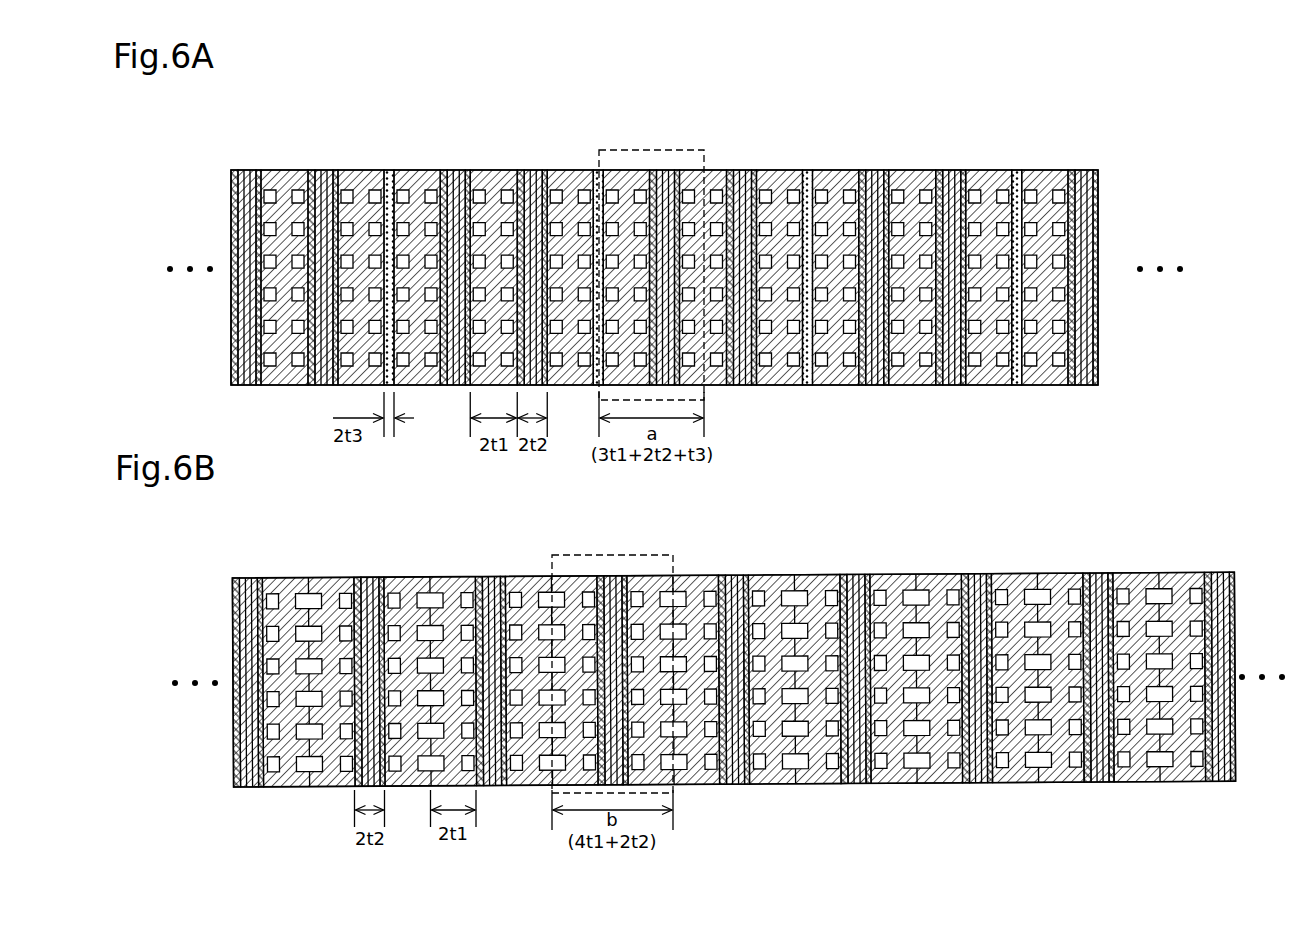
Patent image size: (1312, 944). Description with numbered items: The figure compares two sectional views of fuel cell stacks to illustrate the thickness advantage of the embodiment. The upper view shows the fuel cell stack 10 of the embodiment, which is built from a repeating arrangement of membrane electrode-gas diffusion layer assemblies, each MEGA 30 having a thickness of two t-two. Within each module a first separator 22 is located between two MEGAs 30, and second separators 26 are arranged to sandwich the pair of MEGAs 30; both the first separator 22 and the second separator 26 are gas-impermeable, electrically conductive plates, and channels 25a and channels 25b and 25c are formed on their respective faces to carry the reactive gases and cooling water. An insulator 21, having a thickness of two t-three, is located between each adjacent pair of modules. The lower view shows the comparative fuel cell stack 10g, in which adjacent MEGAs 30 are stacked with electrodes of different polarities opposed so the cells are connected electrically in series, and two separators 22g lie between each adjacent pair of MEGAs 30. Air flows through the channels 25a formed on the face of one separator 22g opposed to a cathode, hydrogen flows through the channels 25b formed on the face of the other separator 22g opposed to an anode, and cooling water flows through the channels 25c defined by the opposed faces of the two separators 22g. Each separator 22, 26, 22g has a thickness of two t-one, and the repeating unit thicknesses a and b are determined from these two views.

In FIG. 6A, the fuel cell stack 10 is at (199, 122).
In FIG. 6B, the fuel cell stack 10g is at (202, 528).
In FIG. 6A, the insulator 21 is at (388, 168).
In FIG. 6A, the first separator 22 is at (285, 168).
In FIG. 6B, the separator 22g is at (288, 576).
In FIG. 6A, the second separator 26 is at (363, 168).
In FIG. 6A, the membrane electrode-gas diffusion layer assembly (MEGA) 30 is at (241, 165).
In FIG. 6B, the membrane electrode-gas diffusion layer assembly (MEGA) 30 is at (247, 573).
In FIG. 6A, the channels 25a is at (898, 362).
In FIG. 6B, the channels 25a is at (830, 766).
In FIG. 6A, the channels 25b is at (850, 362).
In FIG. 6B, the channels 25b is at (757, 766).
In FIG. 6A, the channels 25c is at (822, 362).
In FIG. 6B, the channels 25c is at (794, 766).